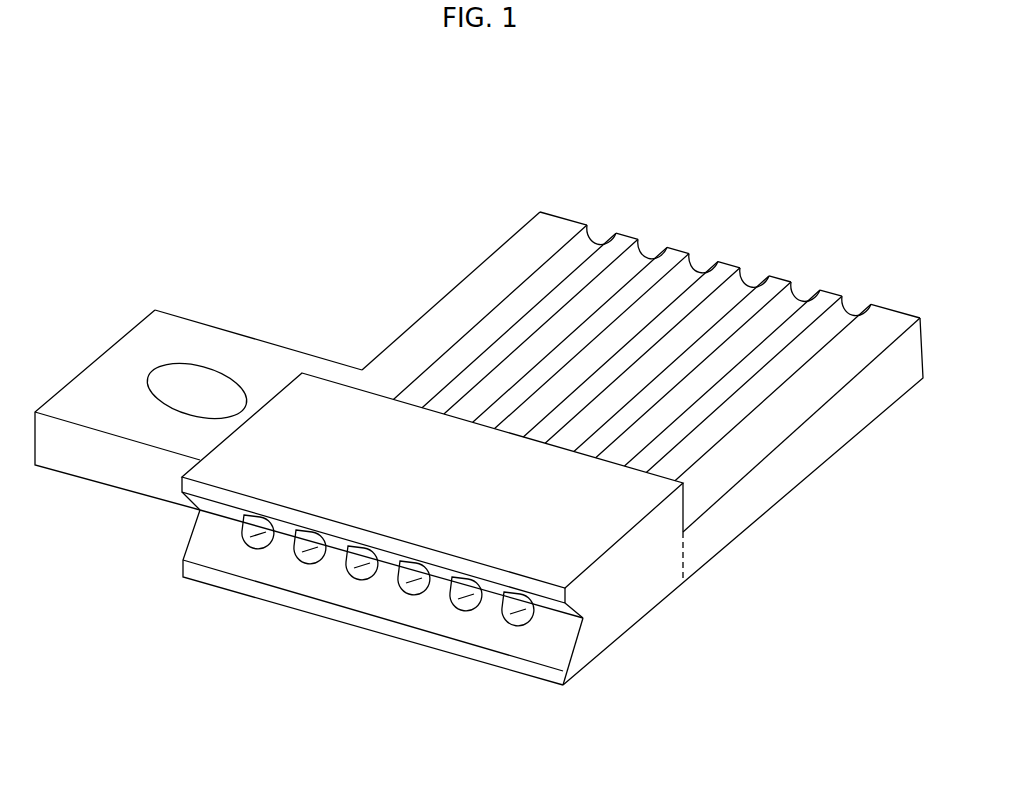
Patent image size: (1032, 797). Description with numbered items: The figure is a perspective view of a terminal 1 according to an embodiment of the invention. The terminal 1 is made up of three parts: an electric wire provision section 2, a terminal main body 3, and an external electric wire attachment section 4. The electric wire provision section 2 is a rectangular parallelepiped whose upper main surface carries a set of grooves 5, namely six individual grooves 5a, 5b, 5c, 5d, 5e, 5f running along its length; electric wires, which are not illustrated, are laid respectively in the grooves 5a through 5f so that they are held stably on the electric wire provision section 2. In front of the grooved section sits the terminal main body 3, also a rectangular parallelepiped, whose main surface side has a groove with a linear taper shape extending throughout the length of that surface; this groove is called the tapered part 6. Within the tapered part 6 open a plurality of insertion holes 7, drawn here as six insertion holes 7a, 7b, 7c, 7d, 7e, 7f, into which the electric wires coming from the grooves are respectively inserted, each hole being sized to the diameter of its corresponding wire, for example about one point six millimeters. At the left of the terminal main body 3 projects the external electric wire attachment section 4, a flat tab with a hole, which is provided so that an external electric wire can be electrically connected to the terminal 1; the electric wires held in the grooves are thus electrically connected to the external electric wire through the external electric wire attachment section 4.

The terminal 1 is at (376, 161).
The electric wire provision section 2 is at (932, 383).
The terminal main body 3 is at (696, 598).
The external electric wire attachment section 4 is at (107, 383).
The grooves 5 is at (896, 193).
The groove 5a is at (598, 243).
The groove 5b is at (650, 258).
The groove 5c is at (702, 272).
The groove 5d is at (752, 288).
The groove 5e is at (805, 302).
The groove 5f is at (858, 316).
The tapered part 6 is at (578, 637).
The insertion holes 7 is at (461, 751).
The insertion hole 7a is at (245, 545).
The insertion hole 7b is at (297, 560).
The insertion hole 7c is at (345, 575).
The insertion hole 7d is at (392, 590).
The insertion hole 7e is at (446, 606).
The insertion hole 7f is at (498, 620).